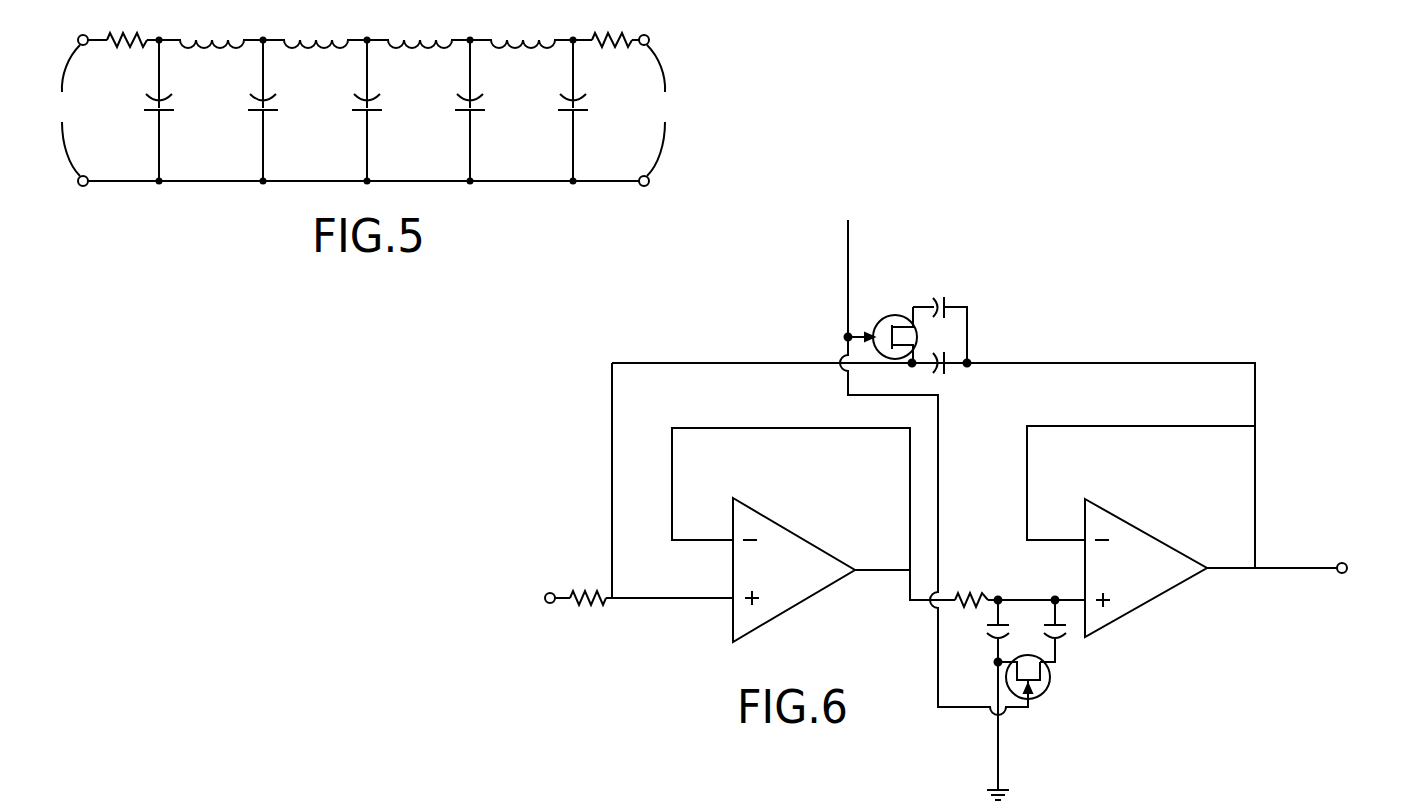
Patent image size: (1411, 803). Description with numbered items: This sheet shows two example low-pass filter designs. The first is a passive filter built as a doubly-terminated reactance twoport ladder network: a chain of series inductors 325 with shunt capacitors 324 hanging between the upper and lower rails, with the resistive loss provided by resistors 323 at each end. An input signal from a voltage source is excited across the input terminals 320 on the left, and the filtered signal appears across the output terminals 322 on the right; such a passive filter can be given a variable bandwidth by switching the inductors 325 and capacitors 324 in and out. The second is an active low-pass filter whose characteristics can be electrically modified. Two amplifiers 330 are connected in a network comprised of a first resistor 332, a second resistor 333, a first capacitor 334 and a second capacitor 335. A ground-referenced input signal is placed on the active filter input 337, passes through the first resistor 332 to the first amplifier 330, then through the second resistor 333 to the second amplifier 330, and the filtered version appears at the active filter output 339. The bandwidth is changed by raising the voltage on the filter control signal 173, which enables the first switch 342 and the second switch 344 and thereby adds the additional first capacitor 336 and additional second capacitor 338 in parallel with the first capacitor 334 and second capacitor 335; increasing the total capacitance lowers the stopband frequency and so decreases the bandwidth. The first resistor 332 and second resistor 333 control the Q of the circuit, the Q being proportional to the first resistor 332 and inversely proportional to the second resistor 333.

In FIG. 5, the input terminals 320 is at (69, 110).
In FIG. 5, the output terminals 322 is at (668, 110).
In FIG. 5, the resistors 323 is at (110, 36).
In FIG. 5, the capacitors 324 is at (164, 118).
In FIG. 5, the inductors 325 is at (193, 38).
In FIG. 6, the filter control signal 173 is at (848, 276).
In FIG. 6, the switch S1 342 is at (893, 315).
In FIG. 6, the capacitor C1' 336 is at (940, 296).
In FIG. 6, the capacitor C1 334 is at (946, 353).
In FIG. 6, the active filter input 337 is at (544, 603).
In FIG. 6, the resistor R1 332 is at (598, 594).
In FIG. 6, the amplifiers 330 is at (797, 604).
In FIG. 6, the resistor R2 333 is at (975, 585).
In FIG. 6, the capacitor C2 335 is at (992, 630).
In FIG. 6, the capacitor C2' 338 is at (1049, 620).
In FIG. 6, the switch S2 344 is at (1055, 722).
In FIG. 6, the active filter output 339 is at (1345, 574).